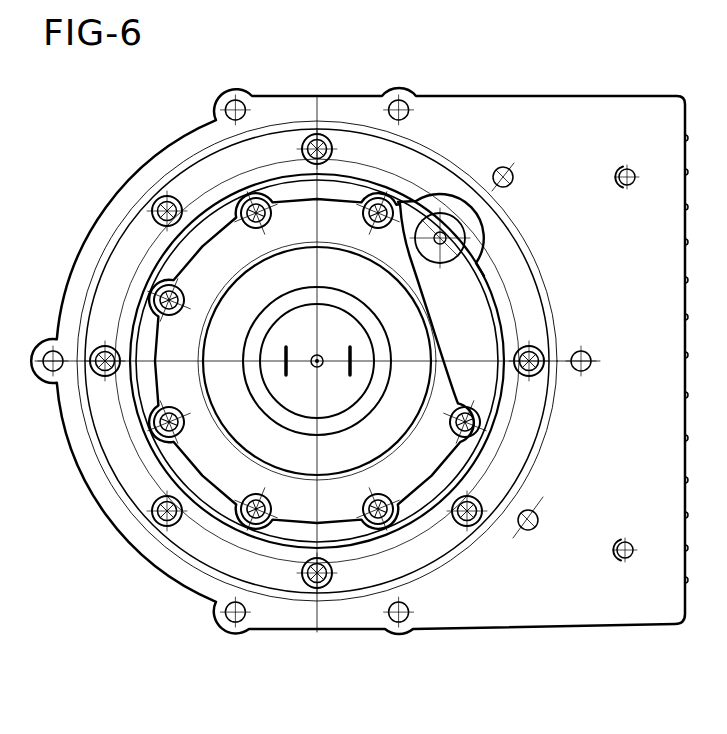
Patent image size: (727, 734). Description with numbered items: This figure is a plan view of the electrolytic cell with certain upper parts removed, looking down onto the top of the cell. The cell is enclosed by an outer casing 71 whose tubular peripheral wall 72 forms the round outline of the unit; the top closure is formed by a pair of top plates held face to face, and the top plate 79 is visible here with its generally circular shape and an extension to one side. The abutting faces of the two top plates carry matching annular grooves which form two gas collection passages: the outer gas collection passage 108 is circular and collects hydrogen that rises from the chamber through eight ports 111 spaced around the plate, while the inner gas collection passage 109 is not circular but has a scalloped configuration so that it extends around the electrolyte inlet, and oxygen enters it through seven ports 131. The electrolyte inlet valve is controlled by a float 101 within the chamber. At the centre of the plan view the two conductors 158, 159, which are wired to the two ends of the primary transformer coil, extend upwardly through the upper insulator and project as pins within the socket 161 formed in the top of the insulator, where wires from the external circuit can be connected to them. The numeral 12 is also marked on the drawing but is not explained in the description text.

The outer casing 71 is at (50, 436).
The tubular peripheral wall 72 is at (134, 545).
The top plate 79 is at (543, 108).
The float 101 is at (473, 291).
The outer gas collection passage 108 is at (353, 150).
The inner gas collection passage 109 is at (291, 210).
The ports 111 is at (165, 200).
The ports 131 is at (392, 203).
The housing wall 12 is at (215, 473).
The conductor 158 is at (287, 364).
The conductor 159 is at (348, 352).
The socket 161 is at (288, 405).